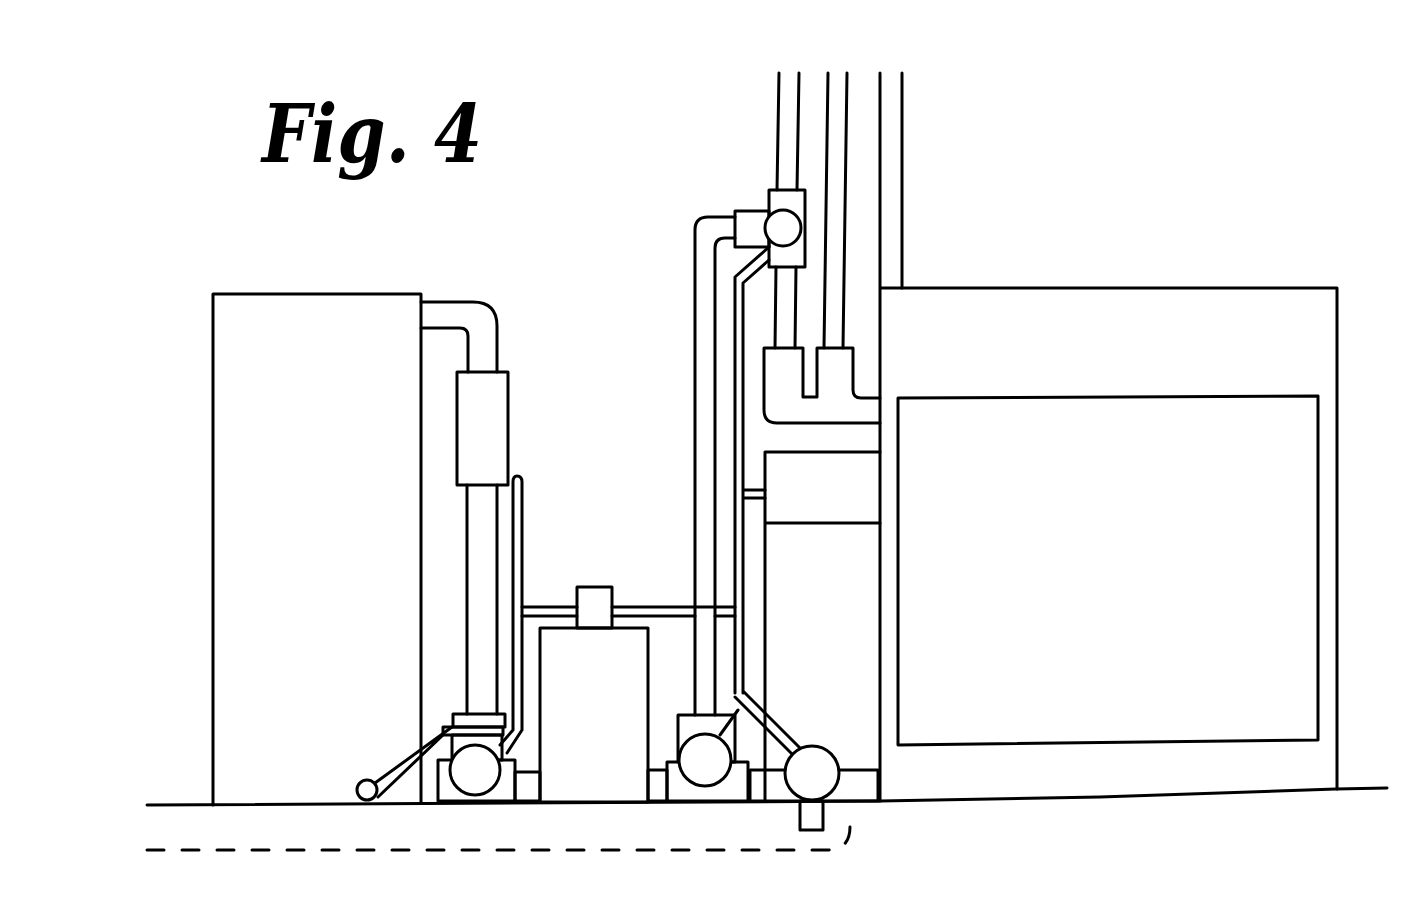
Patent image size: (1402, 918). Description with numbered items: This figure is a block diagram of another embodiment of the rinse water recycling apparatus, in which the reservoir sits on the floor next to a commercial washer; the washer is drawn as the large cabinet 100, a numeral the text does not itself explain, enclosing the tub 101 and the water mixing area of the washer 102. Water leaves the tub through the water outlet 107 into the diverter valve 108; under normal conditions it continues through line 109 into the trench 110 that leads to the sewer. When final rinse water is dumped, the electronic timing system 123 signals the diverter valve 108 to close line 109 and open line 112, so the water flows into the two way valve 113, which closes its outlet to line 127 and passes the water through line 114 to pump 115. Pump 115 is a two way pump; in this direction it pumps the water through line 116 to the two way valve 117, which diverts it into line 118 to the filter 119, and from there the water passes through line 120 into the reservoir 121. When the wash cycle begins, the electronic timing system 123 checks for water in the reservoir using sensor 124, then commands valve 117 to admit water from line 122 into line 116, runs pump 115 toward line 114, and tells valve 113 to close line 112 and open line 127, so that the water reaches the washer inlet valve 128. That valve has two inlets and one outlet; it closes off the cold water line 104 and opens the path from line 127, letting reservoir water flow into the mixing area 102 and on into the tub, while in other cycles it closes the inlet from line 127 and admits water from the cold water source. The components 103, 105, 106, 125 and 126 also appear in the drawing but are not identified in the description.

The main housing 100 is at (1061, 287).
The tub 101 is at (1118, 575).
The water mixing area of the washer 102 is at (838, 408).
The supply line 103 is at (837, 67).
The line 104 is at (792, 68).
The vent line 105 is at (893, 110).
The reservoir 106 is at (842, 502).
The water outlet 107 is at (858, 760).
The diverter valve 108 is at (828, 785).
The line 109 is at (803, 815).
The trench 110 is at (560, 841).
The line 112 is at (758, 788).
The two way valve 113 is at (720, 769).
The line 114 is at (657, 783).
The pump 115 is at (612, 690).
The line 116 is at (530, 787).
The two way valve 117 is at (488, 778).
The line 118 is at (475, 545).
The filter 119 is at (510, 422).
The line 120 is at (493, 315).
The reservoir 121 is at (316, 523).
The line from the reservoir 122 is at (430, 793).
The electronic timing system 123 is at (594, 586).
The sensor 124 is at (367, 778).
The conduit 125 is at (523, 515).
The conduit 126 is at (627, 606).
The line 127 is at (693, 338).
The washer inlet valve 128 is at (773, 213).